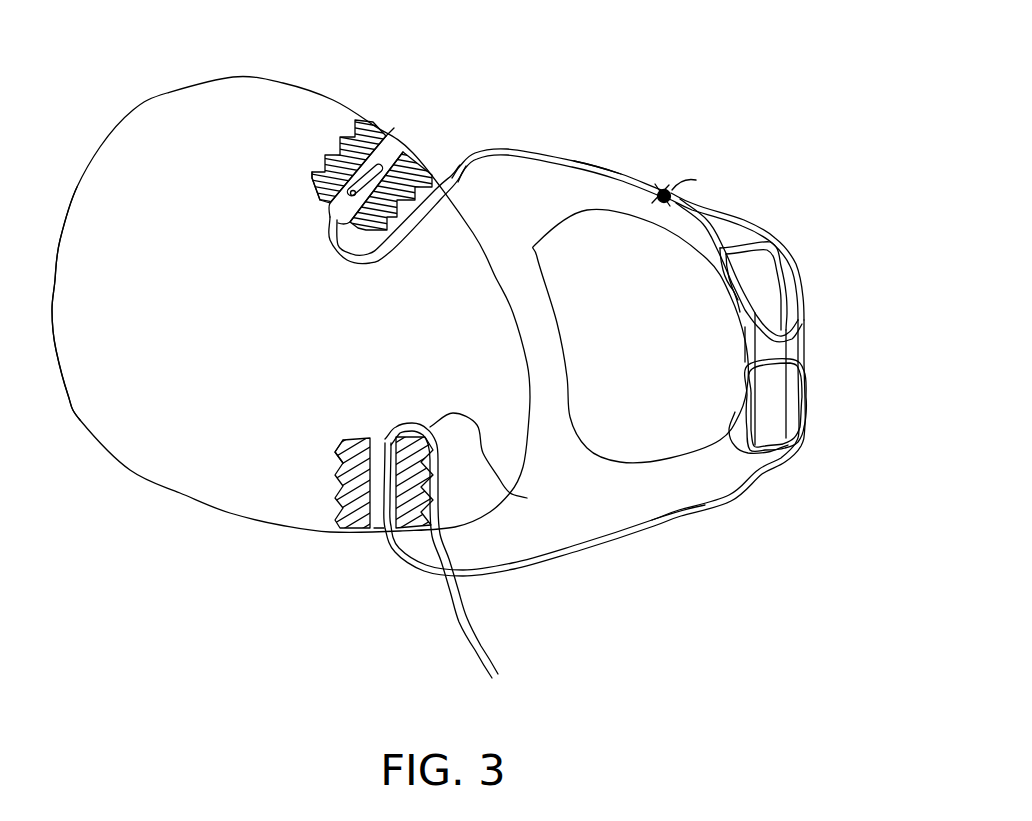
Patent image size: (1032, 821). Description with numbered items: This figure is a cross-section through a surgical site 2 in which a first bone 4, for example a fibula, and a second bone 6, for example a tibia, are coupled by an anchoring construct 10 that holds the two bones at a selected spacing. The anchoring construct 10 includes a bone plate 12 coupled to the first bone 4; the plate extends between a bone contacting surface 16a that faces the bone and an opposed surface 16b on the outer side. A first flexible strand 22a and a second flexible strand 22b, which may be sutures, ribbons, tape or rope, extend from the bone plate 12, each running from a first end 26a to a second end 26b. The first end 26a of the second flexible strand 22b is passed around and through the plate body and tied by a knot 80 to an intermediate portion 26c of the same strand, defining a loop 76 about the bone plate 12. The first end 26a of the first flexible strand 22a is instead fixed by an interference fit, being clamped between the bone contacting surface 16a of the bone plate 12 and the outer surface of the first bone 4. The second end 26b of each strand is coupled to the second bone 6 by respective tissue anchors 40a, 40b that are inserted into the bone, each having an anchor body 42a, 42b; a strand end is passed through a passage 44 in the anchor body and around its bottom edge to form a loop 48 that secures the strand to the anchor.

The surgical site 2 is at (78, 92).
The first bone 4 is at (635, 462).
The second bone 6 is at (80, 422).
The anchoring construct 10 is at (785, 330).
The bone plate 12 is at (775, 430).
The bone contacting surface 16a is at (780, 355).
The opposed surface 16b is at (793, 290).
The first flexible strand 22a is at (555, 558).
The second flexible strand 22b is at (532, 157).
The first end 26a is at (680, 187).
The second end 26b is at (412, 150).
The intermediate portion 26c is at (620, 178).
The tissue anchor 40a is at (333, 498).
The tissue anchor 40b is at (355, 128).
The body 42a is at (347, 447).
The upper buckle attachment 42b is at (332, 208).
The passage 44 is at (397, 118).
The loop 48 is at (507, 494).
The loop 76 is at (760, 228).
The knot 80 is at (669, 188).